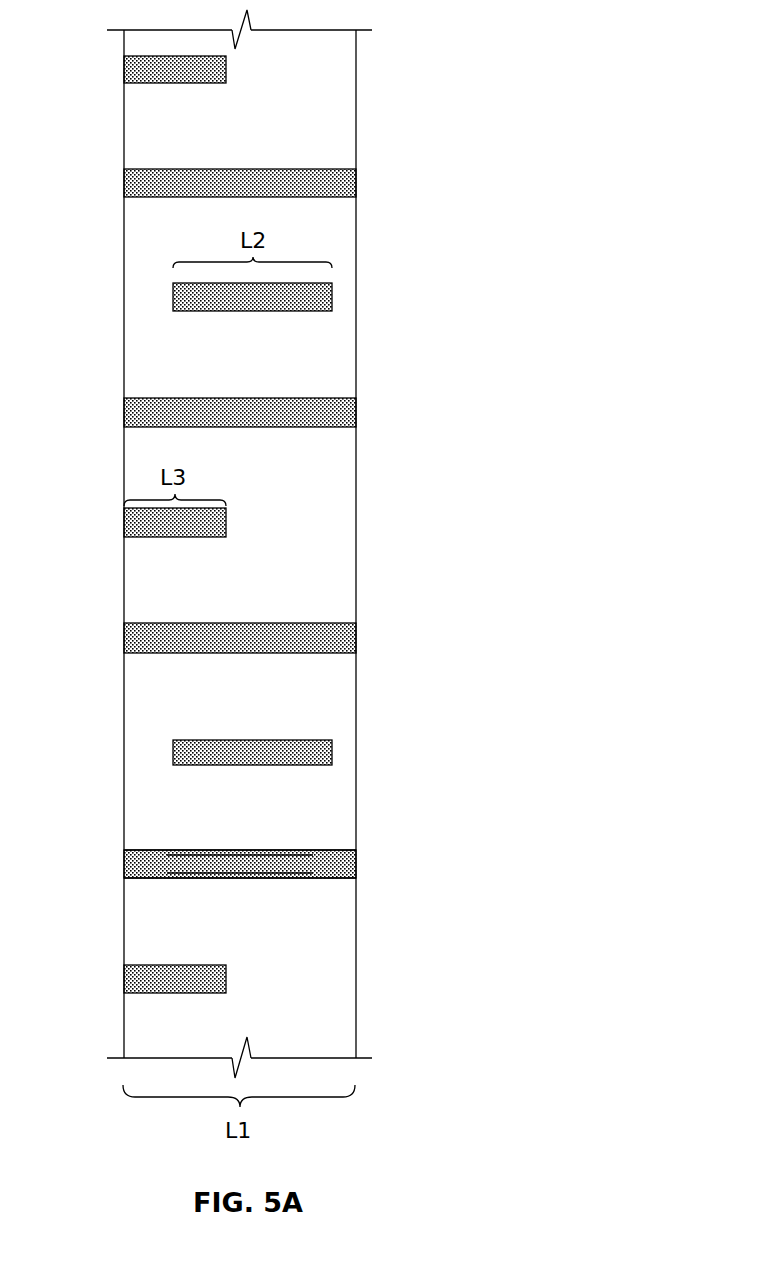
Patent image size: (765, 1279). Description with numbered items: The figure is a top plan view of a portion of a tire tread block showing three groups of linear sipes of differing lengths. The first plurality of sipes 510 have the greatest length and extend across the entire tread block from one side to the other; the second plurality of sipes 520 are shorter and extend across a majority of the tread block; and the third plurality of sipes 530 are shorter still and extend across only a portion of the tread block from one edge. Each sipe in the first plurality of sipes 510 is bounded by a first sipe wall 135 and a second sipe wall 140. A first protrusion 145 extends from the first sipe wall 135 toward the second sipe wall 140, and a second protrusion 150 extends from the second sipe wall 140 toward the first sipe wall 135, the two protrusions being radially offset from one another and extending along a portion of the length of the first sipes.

The first plurality of sipes 510 is at (356, 183).
The second plurality of sipes 520 is at (332, 295).
The third plurality of sipes 530 is at (124, 68).
The second sipe wall 140 is at (333, 853).
The first protrusion 145 is at (197, 852).
The second protrusion 150 is at (238, 875).
The first sipe wall 135 is at (330, 880).